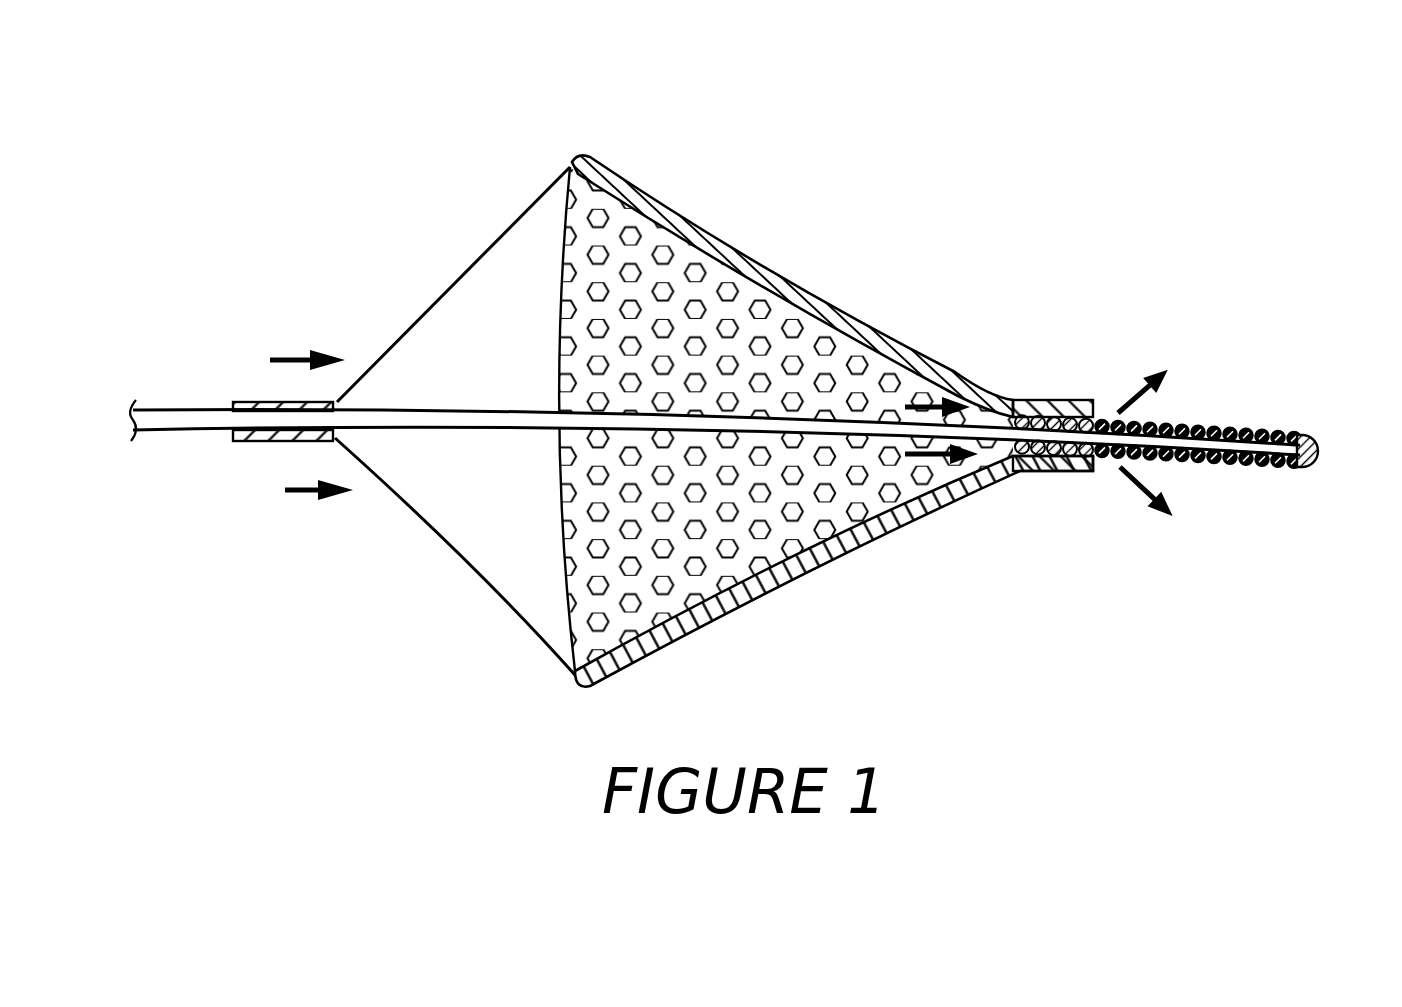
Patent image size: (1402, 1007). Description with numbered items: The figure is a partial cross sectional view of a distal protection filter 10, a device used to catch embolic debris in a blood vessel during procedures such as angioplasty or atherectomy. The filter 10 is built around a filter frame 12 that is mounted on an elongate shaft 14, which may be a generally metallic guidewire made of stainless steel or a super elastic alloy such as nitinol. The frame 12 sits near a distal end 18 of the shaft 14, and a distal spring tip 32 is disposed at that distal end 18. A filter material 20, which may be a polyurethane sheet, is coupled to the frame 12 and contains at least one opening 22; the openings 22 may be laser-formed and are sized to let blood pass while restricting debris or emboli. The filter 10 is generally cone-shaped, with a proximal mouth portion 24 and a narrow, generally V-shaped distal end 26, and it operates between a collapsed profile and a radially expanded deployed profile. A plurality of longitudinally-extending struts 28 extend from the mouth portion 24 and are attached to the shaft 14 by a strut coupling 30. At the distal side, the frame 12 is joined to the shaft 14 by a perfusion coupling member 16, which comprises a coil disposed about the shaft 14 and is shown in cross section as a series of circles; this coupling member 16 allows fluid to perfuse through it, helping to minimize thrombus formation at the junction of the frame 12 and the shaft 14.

The distal protection filter 10 is at (746, 365).
The filter frame 12 is at (739, 260).
The elongate shaft 14 is at (455, 420).
The perfusion coupling member 16 is at (1097, 466).
The distal end 18 is at (1287, 473).
The filter material 20 is at (807, 352).
The opening 22 is at (760, 537).
The proximal mouth portion 24 is at (569, 166).
The distal end 26 is at (1058, 406).
The longitudinally-extending struts 28 is at (472, 568).
The strut coupling 30 is at (255, 400).
The distal spring tip 32 is at (1299, 441).